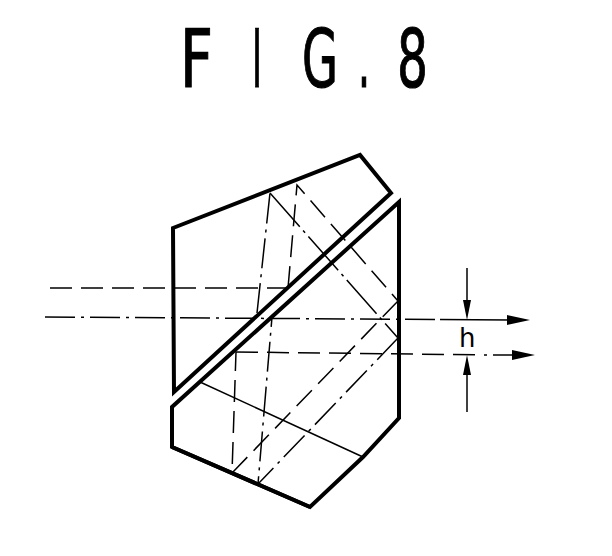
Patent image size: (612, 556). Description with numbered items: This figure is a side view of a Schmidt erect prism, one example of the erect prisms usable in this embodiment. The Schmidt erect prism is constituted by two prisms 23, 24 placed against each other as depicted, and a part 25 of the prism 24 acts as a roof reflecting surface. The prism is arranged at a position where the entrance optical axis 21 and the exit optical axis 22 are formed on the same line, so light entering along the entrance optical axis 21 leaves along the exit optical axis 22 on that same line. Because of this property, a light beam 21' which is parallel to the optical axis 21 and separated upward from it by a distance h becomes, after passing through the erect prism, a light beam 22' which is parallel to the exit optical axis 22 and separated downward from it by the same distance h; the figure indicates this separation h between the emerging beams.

The entrance optical axis 21 is at (242, 348).
The light beam 21' is at (169, 254).
The exit optical axis 22 is at (495, 292).
The light beam 22' is at (393, 384).
The prism 23 is at (333, 184).
The prism 24 is at (393, 408).
The roof reflecting surface 25 is at (221, 489).